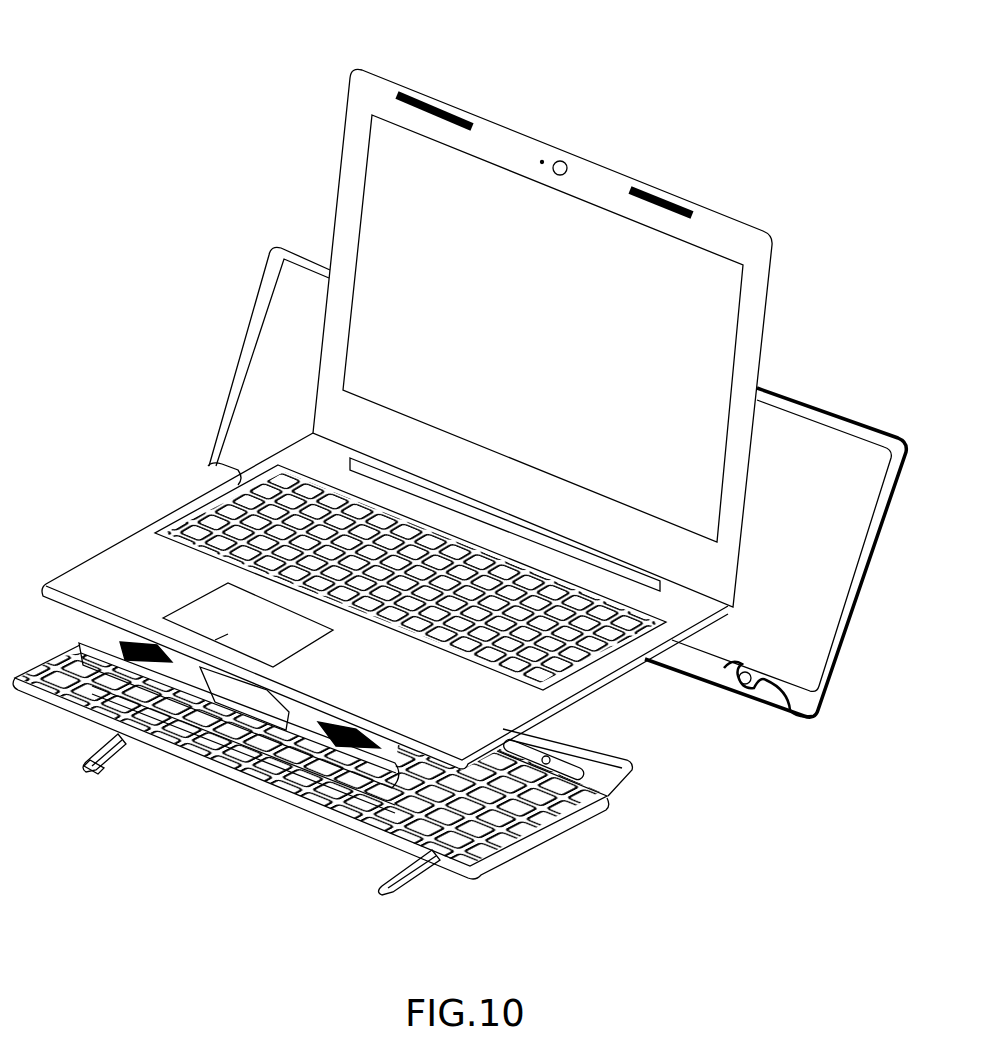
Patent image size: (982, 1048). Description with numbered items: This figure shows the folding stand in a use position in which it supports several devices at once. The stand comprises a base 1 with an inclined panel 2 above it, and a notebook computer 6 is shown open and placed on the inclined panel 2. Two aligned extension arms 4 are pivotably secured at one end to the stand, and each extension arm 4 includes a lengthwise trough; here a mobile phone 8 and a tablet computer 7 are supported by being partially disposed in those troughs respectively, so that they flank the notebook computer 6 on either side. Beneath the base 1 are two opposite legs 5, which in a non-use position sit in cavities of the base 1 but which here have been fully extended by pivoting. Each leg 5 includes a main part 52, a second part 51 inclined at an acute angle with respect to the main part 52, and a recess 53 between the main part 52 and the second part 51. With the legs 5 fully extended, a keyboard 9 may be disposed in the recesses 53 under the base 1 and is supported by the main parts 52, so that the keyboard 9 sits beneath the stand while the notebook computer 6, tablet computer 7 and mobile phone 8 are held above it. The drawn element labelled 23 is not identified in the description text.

The base 1 is at (278, 743).
The panel 2 is at (312, 713).
The extension arm 4 is at (767, 697).
The leg 5 is at (82, 773).
The notebook computer 6 is at (497, 148).
The tablet computer 7 is at (822, 435).
The mobile phone 8 is at (275, 330).
The keyboard 9 is at (180, 727).
The positioning block 23 is at (230, 682).
The second part 51 is at (583, 742).
The main part 52 is at (100, 767).
The recess 53 is at (530, 762).